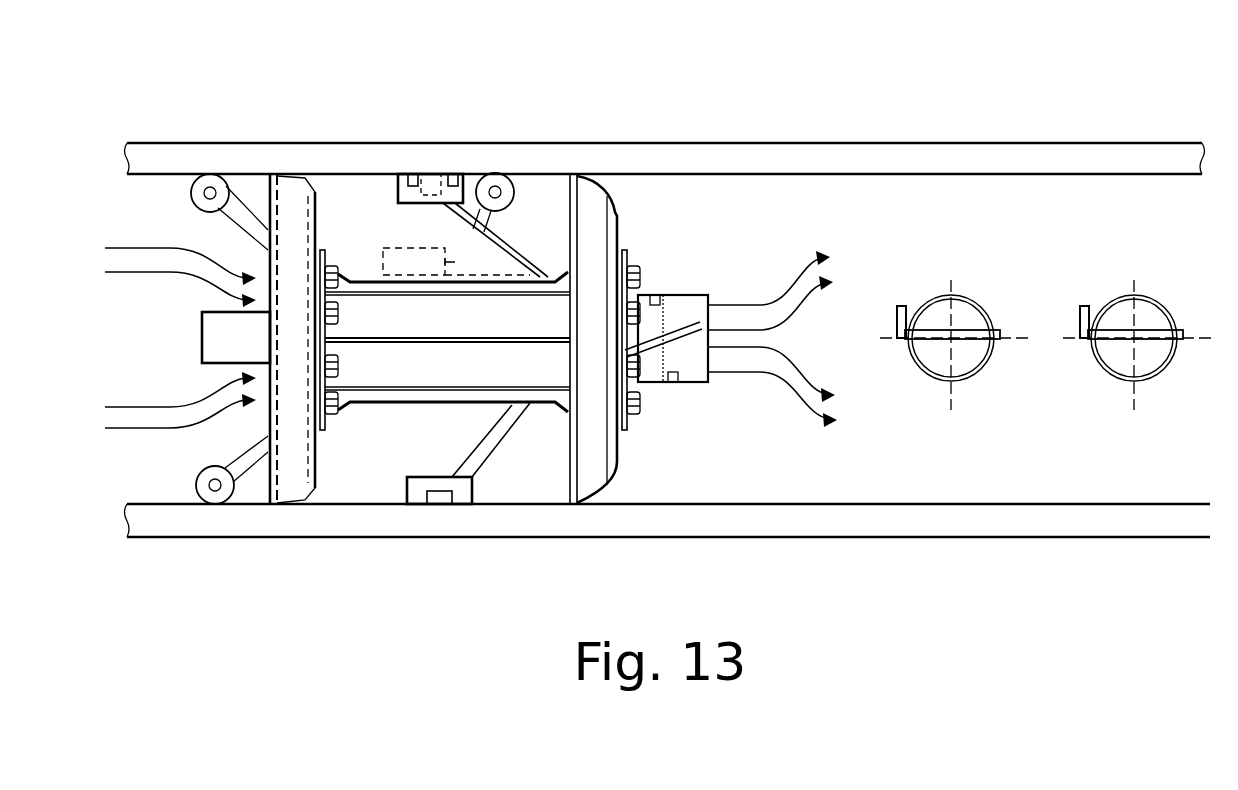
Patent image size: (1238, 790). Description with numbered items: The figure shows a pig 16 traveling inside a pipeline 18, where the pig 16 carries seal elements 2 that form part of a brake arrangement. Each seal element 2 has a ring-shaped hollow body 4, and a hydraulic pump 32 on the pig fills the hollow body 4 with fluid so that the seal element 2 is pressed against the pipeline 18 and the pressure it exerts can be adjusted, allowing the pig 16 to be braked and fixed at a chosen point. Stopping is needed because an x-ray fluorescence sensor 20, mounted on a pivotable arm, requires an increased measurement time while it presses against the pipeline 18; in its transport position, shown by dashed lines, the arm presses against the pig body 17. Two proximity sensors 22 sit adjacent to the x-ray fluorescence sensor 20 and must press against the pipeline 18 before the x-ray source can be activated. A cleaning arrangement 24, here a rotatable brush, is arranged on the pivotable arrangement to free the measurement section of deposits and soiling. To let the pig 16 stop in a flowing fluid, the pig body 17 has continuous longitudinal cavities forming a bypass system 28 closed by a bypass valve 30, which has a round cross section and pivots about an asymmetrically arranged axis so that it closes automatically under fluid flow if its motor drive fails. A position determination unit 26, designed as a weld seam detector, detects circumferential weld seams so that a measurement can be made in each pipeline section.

The seal element 2 is at (317, 493).
The hollow body 4 is at (280, 507).
The pig 16 is at (638, 198).
The pig body 17 is at (385, 392).
The pipeline 18 is at (1112, 152).
The x-ray fluorescence sensor 20 is at (397, 193).
The proximity sensors 22 is at (453, 174).
The cleaning arrangement 24 is at (497, 173).
The position determination unit 26 is at (440, 503).
The bypass system 28 is at (432, 360).
The bypass valve 30 is at (686, 294).
The hydraulic pump 32 is at (202, 338).